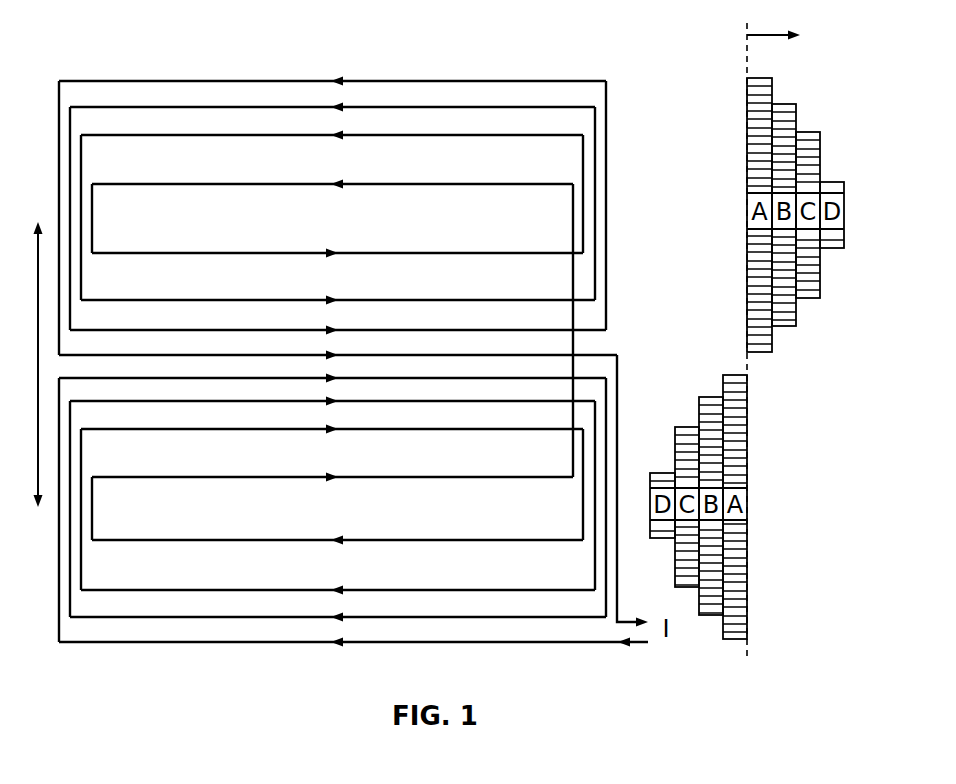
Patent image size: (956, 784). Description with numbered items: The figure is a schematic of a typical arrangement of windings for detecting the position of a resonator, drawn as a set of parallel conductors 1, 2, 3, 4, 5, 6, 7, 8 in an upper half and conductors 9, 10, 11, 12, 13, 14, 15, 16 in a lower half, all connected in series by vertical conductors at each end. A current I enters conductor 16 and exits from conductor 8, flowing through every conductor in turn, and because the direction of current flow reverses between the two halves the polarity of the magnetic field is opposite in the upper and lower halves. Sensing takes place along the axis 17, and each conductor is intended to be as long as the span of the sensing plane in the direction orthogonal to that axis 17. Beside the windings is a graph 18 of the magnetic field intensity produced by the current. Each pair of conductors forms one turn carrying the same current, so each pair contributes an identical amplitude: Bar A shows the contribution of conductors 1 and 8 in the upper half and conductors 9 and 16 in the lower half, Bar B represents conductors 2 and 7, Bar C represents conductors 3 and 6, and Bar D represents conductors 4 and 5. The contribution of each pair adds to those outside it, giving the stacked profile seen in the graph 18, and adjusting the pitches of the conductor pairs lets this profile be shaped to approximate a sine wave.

The conductor 1 is at (332, 69).
The conductor 2 is at (332, 96).
The conductor 3 is at (332, 123).
The conductor 4 is at (332, 171).
The conductor 5 is at (337, 241).
The conductor 6 is at (338, 288).
The conductor 7 is at (338, 319).
The conductor 8 is at (338, 344).
The conductor 9 is at (332, 368).
The conductor 10 is at (332, 391).
The conductor 11 is at (332, 418).
The conductor 12 is at (332, 464).
The conductor 13 is at (337, 528).
The conductor 14 is at (338, 578).
The conductor 15 is at (338, 607).
The conductor 16 is at (353, 633).
The axis 17 is at (38, 348).
The graph of magnetic field intensity 18 is at (766, 338).